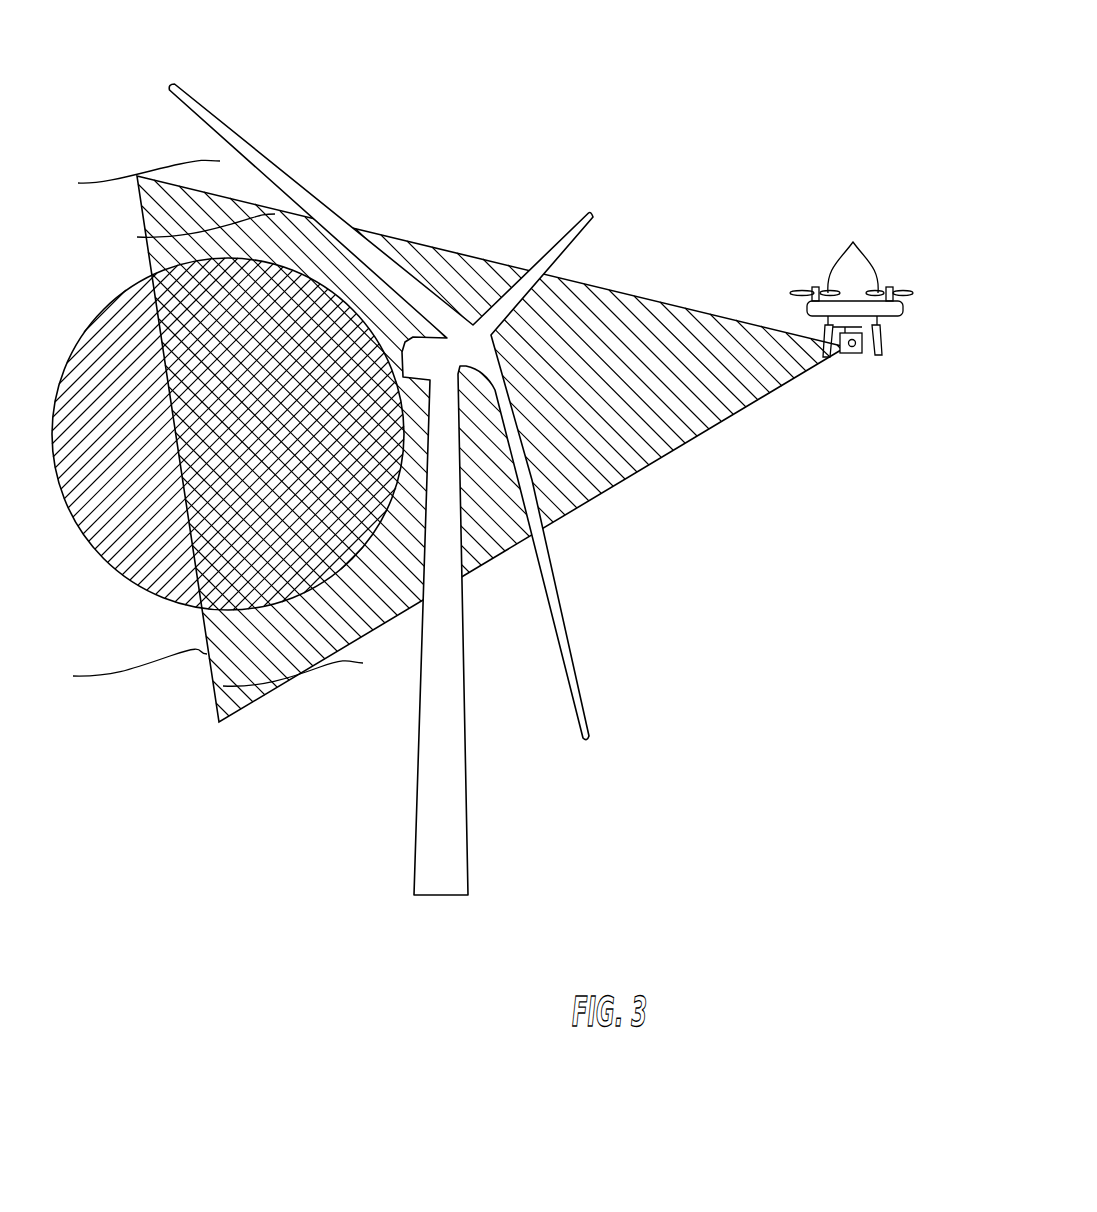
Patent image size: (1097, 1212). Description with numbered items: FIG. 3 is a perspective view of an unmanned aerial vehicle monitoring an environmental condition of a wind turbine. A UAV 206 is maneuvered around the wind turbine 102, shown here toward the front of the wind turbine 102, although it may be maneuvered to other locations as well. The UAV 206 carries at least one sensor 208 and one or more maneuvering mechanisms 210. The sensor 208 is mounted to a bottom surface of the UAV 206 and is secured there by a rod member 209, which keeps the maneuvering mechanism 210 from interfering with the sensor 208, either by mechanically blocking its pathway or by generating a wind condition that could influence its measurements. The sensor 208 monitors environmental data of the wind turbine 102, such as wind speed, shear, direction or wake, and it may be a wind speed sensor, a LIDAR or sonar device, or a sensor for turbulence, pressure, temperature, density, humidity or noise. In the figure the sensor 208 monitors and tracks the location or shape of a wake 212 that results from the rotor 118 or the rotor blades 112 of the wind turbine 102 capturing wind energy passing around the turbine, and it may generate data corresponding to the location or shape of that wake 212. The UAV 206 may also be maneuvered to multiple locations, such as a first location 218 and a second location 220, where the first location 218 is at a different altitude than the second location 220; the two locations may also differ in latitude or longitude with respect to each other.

The wind turbine 102 is at (414, 467).
The rotor blades 112 is at (560, 245).
The rotor 118 is at (522, 360).
The UAV 206 is at (880, 313).
The sensor 208 is at (853, 354).
The rod member 209 is at (840, 336).
The maneuvering mechanism 210 is at (853, 242).
The wake 212 is at (88, 510).
The first location 218 is at (847, 289).
The second location 220 is at (803, 650).